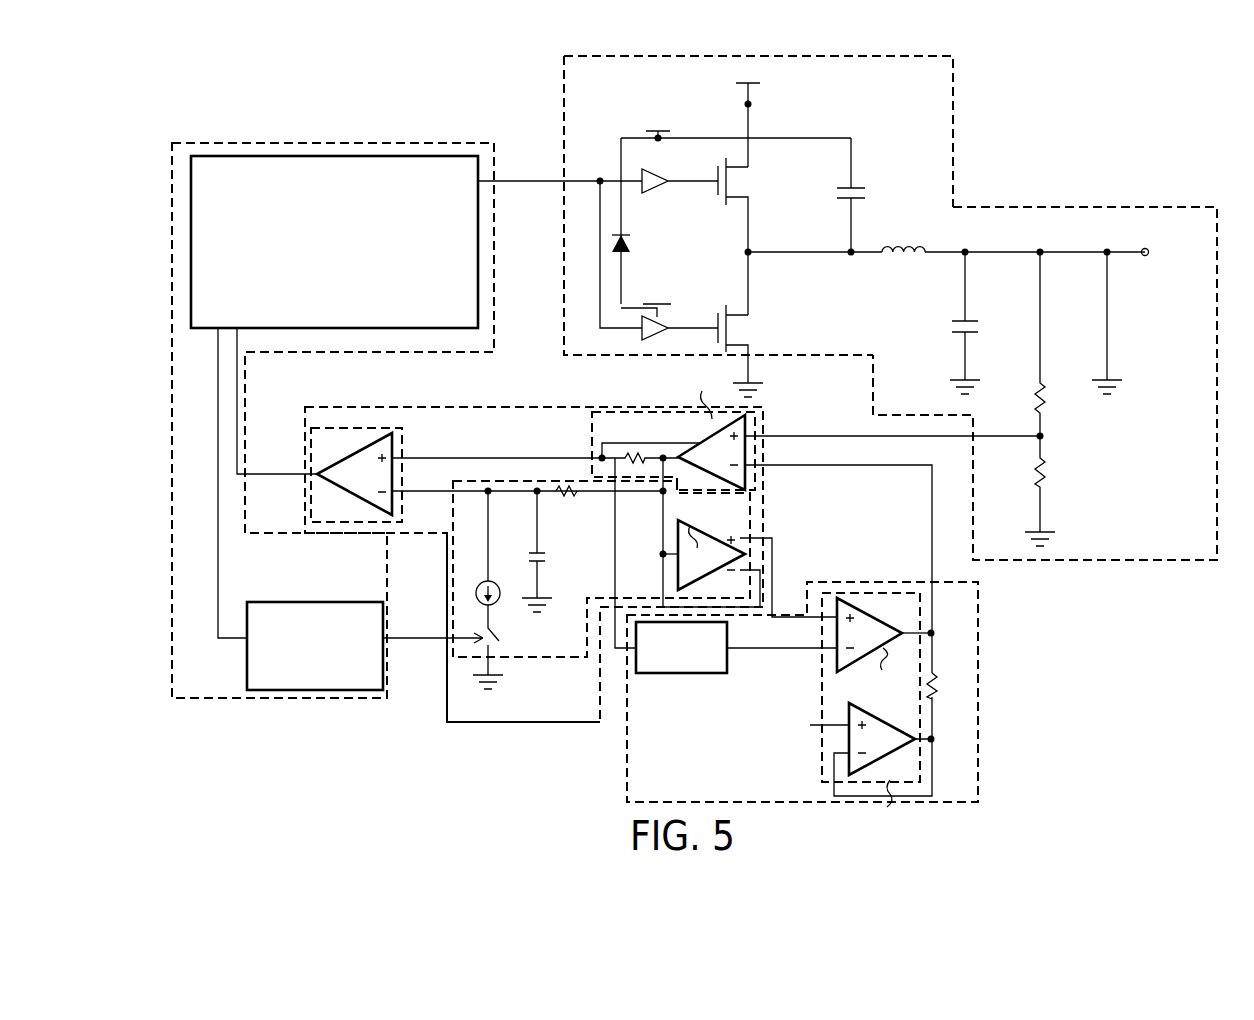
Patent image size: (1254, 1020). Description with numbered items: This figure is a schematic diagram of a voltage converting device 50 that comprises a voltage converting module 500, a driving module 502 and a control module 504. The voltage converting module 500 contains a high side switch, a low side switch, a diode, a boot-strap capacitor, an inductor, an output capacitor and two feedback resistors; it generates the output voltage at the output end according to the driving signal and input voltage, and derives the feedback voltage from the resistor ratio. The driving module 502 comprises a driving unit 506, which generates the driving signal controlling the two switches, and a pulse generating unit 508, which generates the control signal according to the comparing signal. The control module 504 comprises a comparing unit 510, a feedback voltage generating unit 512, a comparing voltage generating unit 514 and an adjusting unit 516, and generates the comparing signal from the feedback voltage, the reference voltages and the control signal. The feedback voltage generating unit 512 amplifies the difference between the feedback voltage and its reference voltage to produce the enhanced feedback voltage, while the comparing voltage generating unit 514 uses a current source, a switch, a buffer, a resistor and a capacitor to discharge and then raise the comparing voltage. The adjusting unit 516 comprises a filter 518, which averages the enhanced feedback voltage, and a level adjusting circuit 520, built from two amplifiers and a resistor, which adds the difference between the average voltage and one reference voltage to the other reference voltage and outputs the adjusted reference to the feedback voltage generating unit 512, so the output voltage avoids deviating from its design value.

The voltage converting device 50 is at (1153, 118).
The voltage converting module 500 is at (1030, 207).
The driving module 502 is at (380, 143).
The control module 504 is at (505, 725).
The driving unit 506 is at (312, 155).
The pulse generating unit 508 is at (310, 602).
The comparing unit 510 is at (340, 427).
The feedback voltage generating unit 512 is at (592, 428).
The comparing voltage generating unit 514 is at (548, 660).
The adjusting unit 516 is at (978, 610).
The filter 518 is at (680, 675).
The level adjusting circuit 520 is at (865, 592).